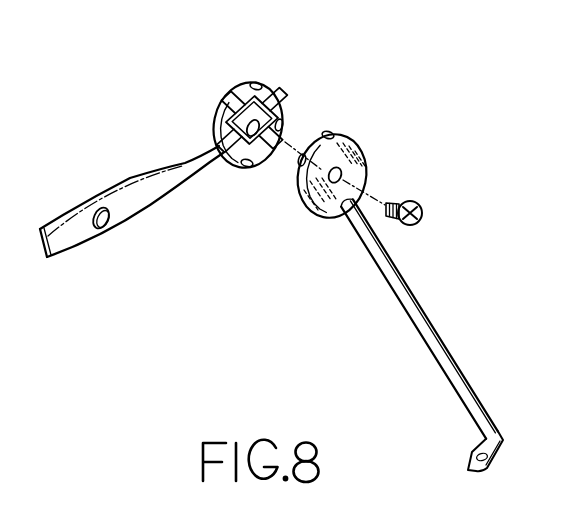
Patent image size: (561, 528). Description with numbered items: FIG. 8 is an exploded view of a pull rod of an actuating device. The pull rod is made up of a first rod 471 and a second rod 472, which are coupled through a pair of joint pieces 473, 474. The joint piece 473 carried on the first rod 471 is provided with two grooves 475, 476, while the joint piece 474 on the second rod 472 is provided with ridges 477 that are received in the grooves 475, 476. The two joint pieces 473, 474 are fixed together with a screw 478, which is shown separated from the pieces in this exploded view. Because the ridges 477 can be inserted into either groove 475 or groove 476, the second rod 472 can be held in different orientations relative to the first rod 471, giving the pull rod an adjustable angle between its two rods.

The first rod 471 is at (150, 210).
The second rod 472 is at (432, 327).
The joint piece 473 is at (213, 128).
The joint piece 474 is at (369, 158).
The groove 475 is at (246, 91).
The groove 476 is at (283, 120).
The ridges 477 is at (329, 133).
The screw 478 is at (424, 213).